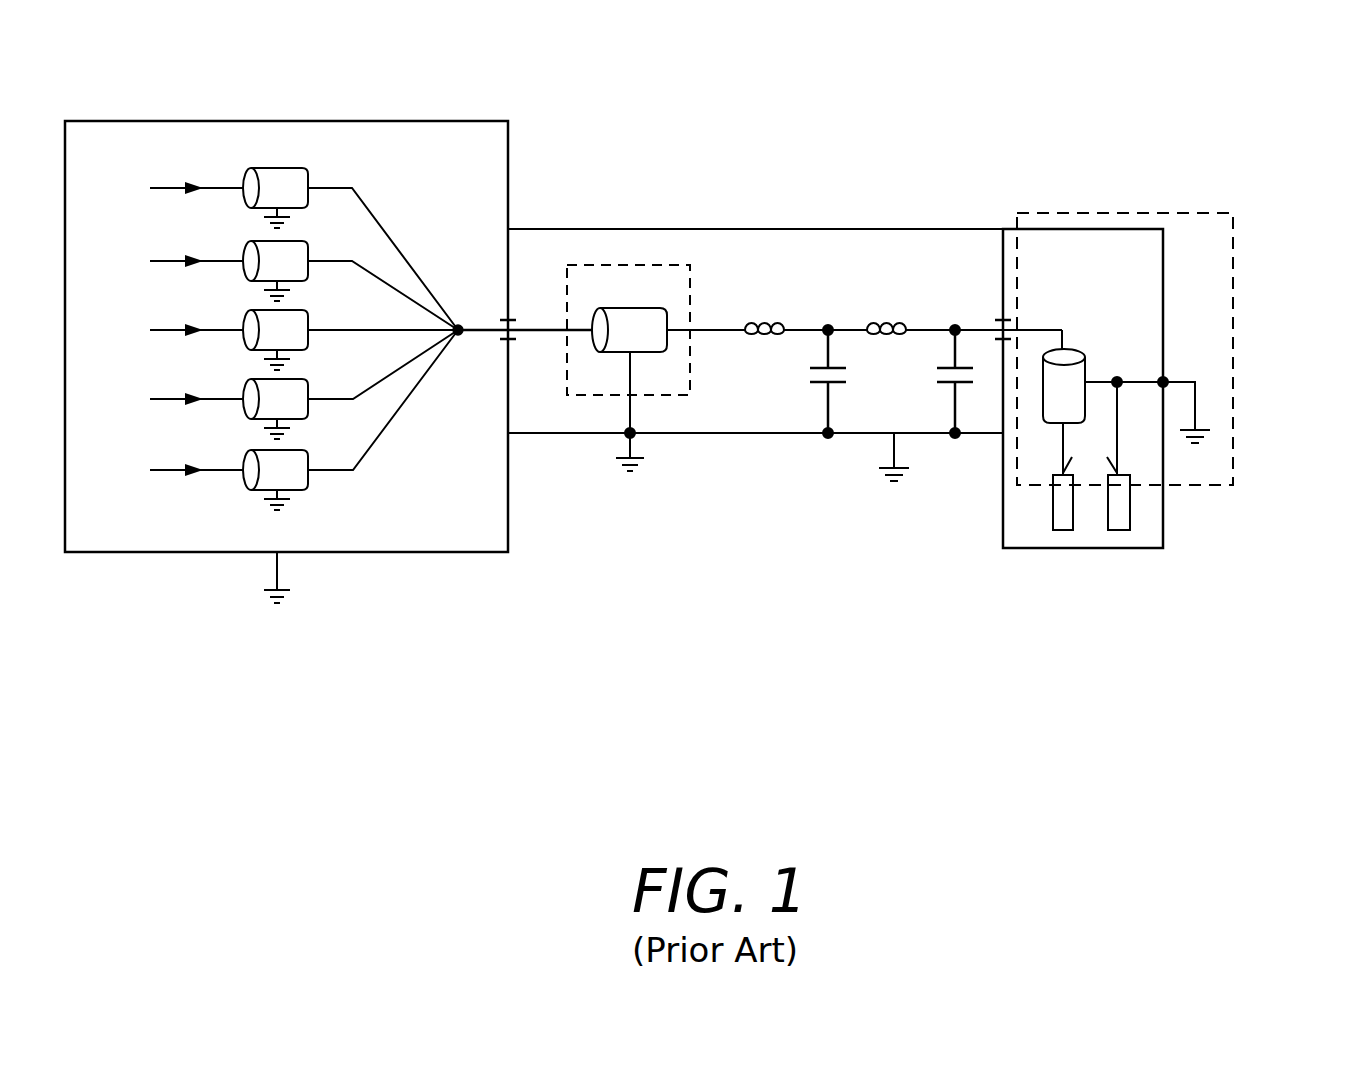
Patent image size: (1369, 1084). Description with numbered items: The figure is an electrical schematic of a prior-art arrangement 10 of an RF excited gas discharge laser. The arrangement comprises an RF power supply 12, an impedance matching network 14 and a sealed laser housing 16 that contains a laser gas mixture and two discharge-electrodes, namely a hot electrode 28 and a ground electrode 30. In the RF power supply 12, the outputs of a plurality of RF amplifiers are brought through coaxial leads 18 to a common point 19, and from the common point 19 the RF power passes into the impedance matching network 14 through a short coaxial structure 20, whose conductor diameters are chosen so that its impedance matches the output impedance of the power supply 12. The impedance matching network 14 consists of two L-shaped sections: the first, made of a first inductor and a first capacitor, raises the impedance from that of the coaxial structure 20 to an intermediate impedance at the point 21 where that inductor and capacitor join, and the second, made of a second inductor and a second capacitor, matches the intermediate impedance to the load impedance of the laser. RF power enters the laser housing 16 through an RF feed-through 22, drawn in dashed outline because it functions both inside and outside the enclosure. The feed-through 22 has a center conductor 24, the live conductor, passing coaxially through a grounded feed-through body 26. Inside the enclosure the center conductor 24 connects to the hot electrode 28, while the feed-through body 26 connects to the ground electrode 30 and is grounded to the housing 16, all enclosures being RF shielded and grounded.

The prior-art arrangement 10 is at (596, 710).
The RF power supply 12 is at (193, 572).
The impedance matching network 14 is at (714, 448).
The sealed laser housing 16 is at (982, 526).
The coaxial leads 18 is at (268, 178).
The common point 19 is at (466, 306).
The short coaxial structure 20 is at (622, 310).
The point 21 is at (825, 305).
The RF feed-through 22 is at (1252, 244).
The center conductor 24 is at (1065, 338).
The feed-through body 26 is at (1053, 418).
The hot electrode 28 is at (1060, 530).
The ground electrode 30 is at (1120, 528).